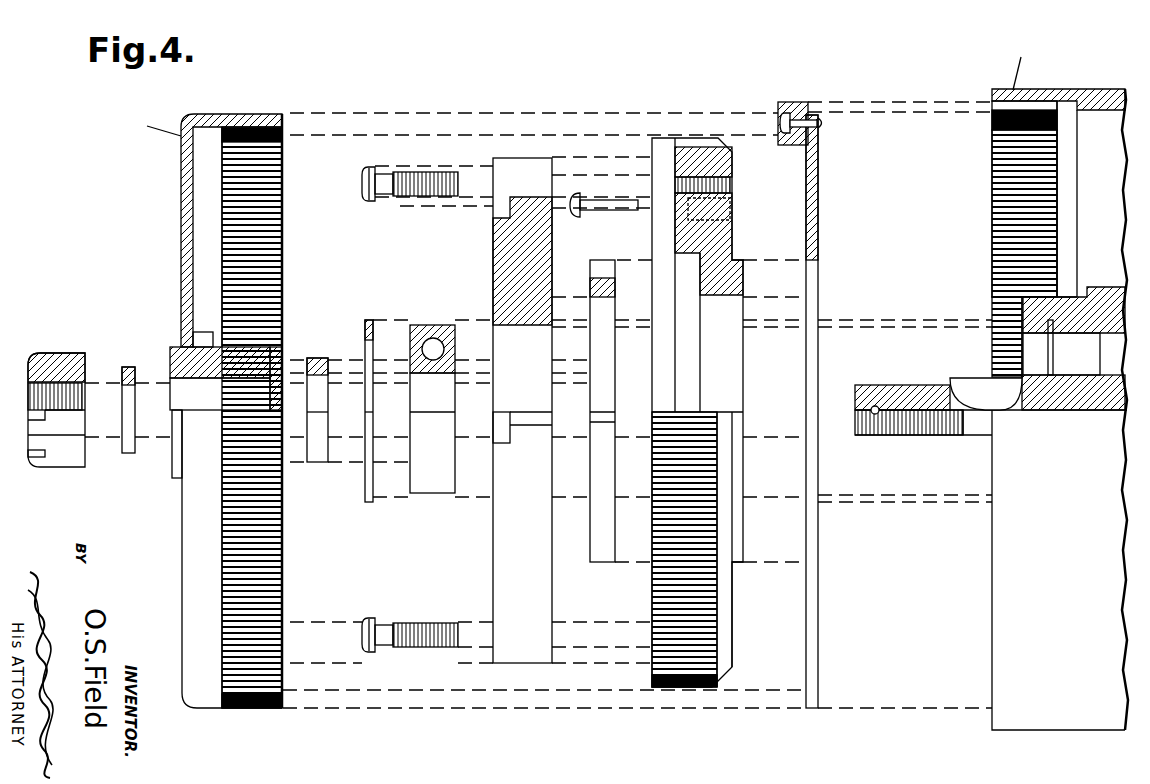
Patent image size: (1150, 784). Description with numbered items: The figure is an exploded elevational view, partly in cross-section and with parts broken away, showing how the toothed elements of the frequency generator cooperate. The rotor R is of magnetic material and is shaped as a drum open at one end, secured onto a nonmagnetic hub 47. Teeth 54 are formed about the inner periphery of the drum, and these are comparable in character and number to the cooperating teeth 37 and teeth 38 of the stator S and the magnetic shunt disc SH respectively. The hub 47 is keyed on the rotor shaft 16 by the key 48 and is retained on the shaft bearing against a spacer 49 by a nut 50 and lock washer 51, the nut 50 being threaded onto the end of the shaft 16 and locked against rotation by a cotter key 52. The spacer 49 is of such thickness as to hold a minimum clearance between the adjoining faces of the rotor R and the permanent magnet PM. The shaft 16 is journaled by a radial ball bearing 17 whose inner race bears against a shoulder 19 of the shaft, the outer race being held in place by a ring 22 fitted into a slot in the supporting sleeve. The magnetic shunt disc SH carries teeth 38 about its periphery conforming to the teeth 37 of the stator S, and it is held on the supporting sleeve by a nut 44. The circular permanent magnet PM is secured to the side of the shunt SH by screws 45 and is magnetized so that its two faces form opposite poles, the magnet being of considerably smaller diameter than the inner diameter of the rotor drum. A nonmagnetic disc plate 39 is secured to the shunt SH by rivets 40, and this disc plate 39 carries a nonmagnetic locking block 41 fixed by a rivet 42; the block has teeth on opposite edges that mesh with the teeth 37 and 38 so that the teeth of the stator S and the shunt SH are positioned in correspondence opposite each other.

The rotor R is at (190, 397).
The teeth 54 is at (288, 127).
The nonmagnetic hub 47 is at (180, 346).
The nut 50 is at (48, 360).
The lock washer 51 is at (128, 367).
The spacer 49 is at (314, 455).
The ring 22 is at (368, 494).
The radial ball bearing 17 is at (410, 339).
The shoulder 19 is at (430, 490).
The circular permanent magnet PM is at (493, 262).
The screws 45 is at (362, 203).
The rivets 40 is at (608, 210).
The nut 44 is at (596, 266).
The magnetic shunt disc SH is at (713, 412).
The teeth 38 is at (713, 600).
The nonmagnetic disc plate 39 is at (818, 242).
The nonmagnetic locking block 41 is at (798, 102).
The rivet 42 is at (819, 125).
The stator S is at (991, 381).
The teeth 37 is at (998, 105).
The rotor shaft 16 is at (975, 430).
The key 48 is at (965, 380).
The cotter key 52 is at (870, 410).